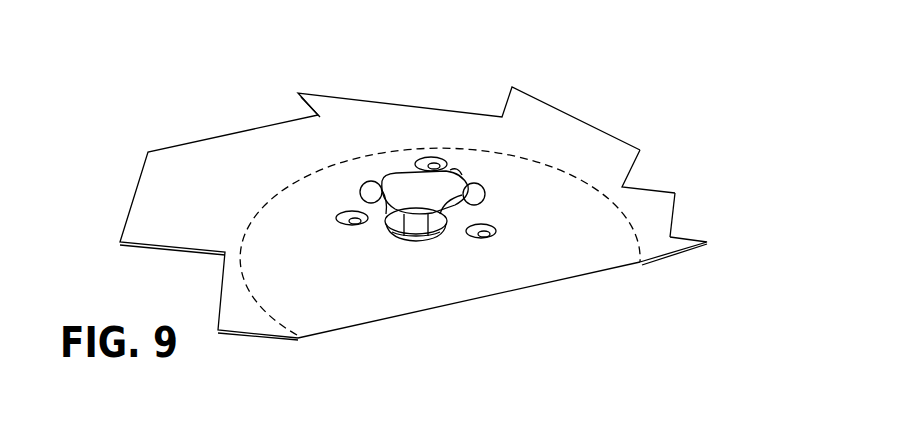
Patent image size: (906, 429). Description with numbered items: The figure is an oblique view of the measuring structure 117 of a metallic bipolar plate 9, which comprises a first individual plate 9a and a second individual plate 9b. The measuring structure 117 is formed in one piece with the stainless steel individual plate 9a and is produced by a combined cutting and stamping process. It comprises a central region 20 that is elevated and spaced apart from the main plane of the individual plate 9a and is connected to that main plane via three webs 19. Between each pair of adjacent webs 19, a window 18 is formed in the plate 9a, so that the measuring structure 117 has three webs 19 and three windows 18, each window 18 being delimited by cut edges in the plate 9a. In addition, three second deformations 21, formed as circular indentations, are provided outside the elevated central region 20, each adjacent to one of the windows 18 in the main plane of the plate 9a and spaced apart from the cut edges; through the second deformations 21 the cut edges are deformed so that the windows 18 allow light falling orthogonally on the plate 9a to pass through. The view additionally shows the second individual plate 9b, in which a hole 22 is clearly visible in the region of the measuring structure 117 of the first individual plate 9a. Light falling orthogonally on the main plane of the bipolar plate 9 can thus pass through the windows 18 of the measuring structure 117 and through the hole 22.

The measuring structure 117 is at (370, 95).
The bipolar plate 9 is at (611, 84).
The individual plate 9a is at (659, 188).
The second individual plate 9b is at (688, 253).
The window 18 is at (457, 165).
The web 19 is at (382, 180).
The central region 20 is at (425, 192).
The second deformation 21 is at (427, 156).
The hole 22 is at (519, 303).